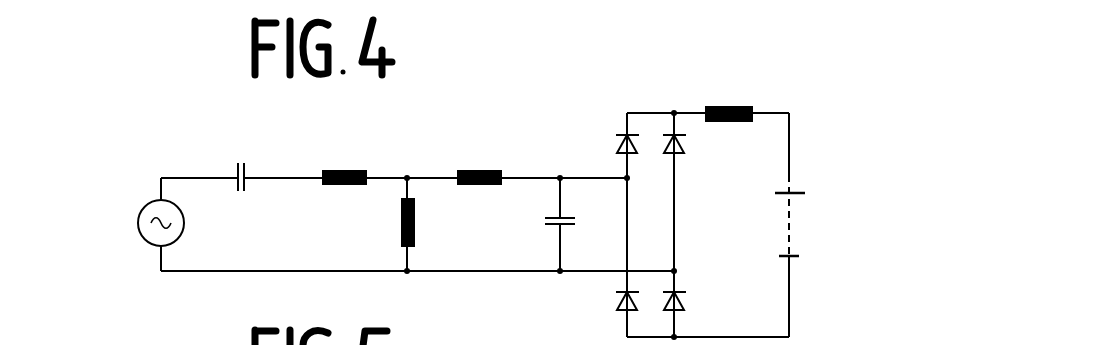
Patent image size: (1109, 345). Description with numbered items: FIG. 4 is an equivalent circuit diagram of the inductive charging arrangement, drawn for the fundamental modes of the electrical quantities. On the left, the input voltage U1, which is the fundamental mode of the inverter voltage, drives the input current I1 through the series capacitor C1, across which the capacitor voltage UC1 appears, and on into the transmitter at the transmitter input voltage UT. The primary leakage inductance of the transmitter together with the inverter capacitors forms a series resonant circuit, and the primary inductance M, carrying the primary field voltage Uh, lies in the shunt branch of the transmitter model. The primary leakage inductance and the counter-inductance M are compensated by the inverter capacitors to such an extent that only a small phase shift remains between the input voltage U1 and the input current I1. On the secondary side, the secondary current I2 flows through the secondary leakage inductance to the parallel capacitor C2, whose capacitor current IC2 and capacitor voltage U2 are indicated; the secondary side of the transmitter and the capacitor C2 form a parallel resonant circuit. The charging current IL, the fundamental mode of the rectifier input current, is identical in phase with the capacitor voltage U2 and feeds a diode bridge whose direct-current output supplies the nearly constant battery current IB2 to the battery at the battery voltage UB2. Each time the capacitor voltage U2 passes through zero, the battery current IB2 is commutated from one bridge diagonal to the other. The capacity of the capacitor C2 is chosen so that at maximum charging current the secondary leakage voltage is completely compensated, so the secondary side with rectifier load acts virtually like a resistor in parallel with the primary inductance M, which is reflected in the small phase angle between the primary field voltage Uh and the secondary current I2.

The input voltage U1 is at (123, 187).
The inverter capacitor C1 is at (227, 184).
The capacitor voltage UC1 is at (258, 152).
The transmitter input voltage UT is at (280, 188).
The input current I1 is at (366, 134).
The primary inductance M is at (397, 224).
The primary field voltage Uh is at (430, 197).
The secondary current I2 is at (503, 134).
The charging current IL is at (590, 153).
The secondary capacitor C2 is at (567, 224).
The capacitor current IC2 is at (545, 240).
The capacitor voltage U2 is at (613, 200).
The battery current IB2 is at (705, 93).
The battery voltage UB2 is at (811, 224).